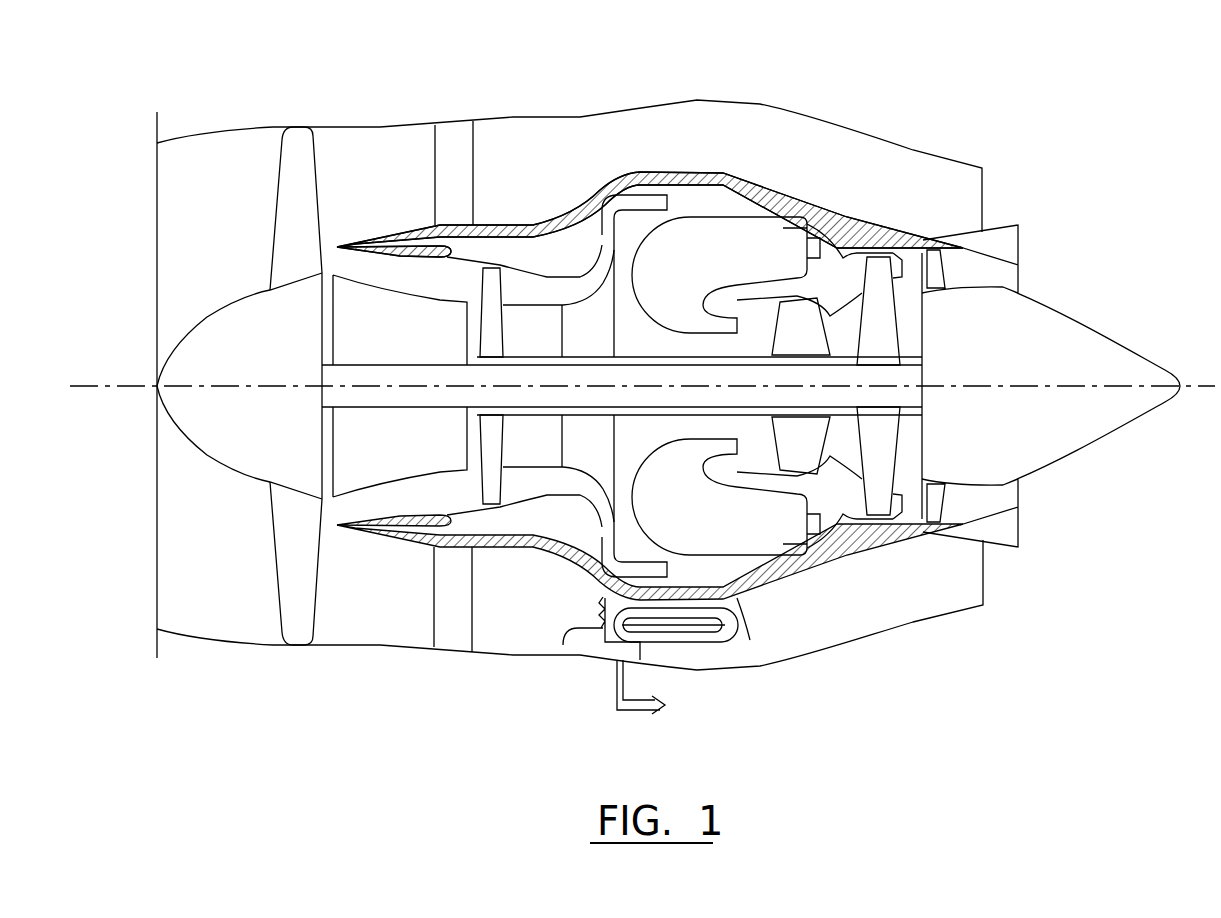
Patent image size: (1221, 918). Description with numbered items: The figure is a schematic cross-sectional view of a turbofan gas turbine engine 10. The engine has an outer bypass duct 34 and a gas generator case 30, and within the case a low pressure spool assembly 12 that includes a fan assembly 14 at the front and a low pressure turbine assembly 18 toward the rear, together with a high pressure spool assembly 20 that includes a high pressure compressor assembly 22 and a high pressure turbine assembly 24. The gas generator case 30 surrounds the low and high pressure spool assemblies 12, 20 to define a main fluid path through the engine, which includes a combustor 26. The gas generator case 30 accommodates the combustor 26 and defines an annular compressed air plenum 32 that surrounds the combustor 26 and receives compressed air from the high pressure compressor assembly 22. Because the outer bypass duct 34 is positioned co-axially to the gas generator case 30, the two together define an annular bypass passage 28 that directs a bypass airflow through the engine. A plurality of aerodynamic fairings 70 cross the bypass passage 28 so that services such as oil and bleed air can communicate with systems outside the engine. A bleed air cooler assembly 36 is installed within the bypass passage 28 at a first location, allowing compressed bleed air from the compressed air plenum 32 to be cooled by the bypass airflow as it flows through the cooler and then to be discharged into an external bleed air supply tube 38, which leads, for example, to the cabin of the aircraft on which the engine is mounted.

The gas turbine engine 10 is at (623, 88).
The low pressure spool assembly 12 is at (411, 363).
The fan assembly 14 is at (275, 190).
The low pressure turbine assembly 18 is at (910, 278).
The high pressure spool assembly 20 is at (543, 357).
The high pressure compressor assembly 22 is at (517, 268).
The high pressure turbine assembly 24 is at (843, 250).
The combustor 26 is at (773, 235).
The annular bypass passage 28 is at (733, 153).
The gas generator case 30 is at (712, 597).
The annular compressed air plenum 32 is at (697, 577).
The outer bypass duct 34 is at (722, 100).
The bleed air cooler assembly 36 is at (733, 627).
The external bleed air supply tube 38 is at (627, 722).
The aerodynamic fairings 70 is at (565, 645).